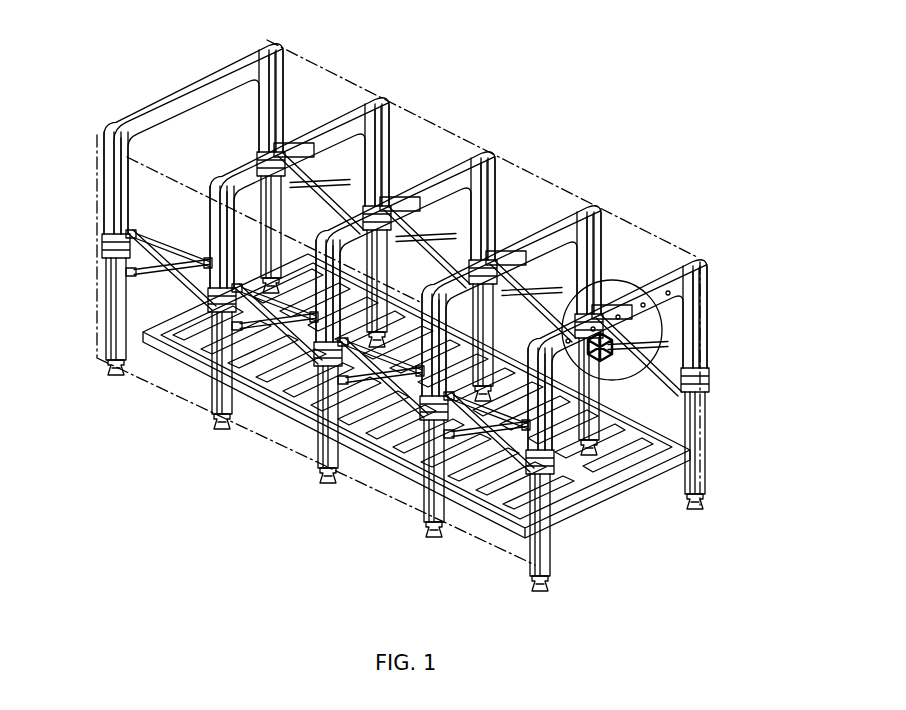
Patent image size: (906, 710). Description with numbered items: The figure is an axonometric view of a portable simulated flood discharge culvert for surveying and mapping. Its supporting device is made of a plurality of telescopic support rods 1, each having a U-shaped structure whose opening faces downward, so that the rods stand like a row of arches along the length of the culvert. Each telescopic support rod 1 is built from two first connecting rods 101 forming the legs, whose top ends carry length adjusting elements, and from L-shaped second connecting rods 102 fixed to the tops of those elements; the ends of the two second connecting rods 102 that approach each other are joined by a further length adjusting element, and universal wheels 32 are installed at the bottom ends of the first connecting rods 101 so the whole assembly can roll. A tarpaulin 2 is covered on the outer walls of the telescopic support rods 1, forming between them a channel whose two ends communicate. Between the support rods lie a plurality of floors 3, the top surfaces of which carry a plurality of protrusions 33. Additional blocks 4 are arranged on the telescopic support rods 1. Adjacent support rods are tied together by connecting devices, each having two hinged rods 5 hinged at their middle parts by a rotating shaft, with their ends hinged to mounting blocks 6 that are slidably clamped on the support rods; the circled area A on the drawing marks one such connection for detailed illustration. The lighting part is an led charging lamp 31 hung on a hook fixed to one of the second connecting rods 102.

The telescopic support rod 1 is at (687, 432).
The first connecting rod 101 is at (540, 565).
The second connecting rod 102 is at (672, 293).
The tarpaulin 2 is at (556, 195).
The floor 3 is at (613, 513).
The led charging lamp 31 is at (296, 142).
The universal wheel 32 is at (447, 537).
The protrusion 33 is at (645, 492).
The additional block 4 is at (138, 126).
The hinged rod 5 is at (292, 186).
The mounting block 6 is at (132, 277).
The detail region A is at (667, 317).